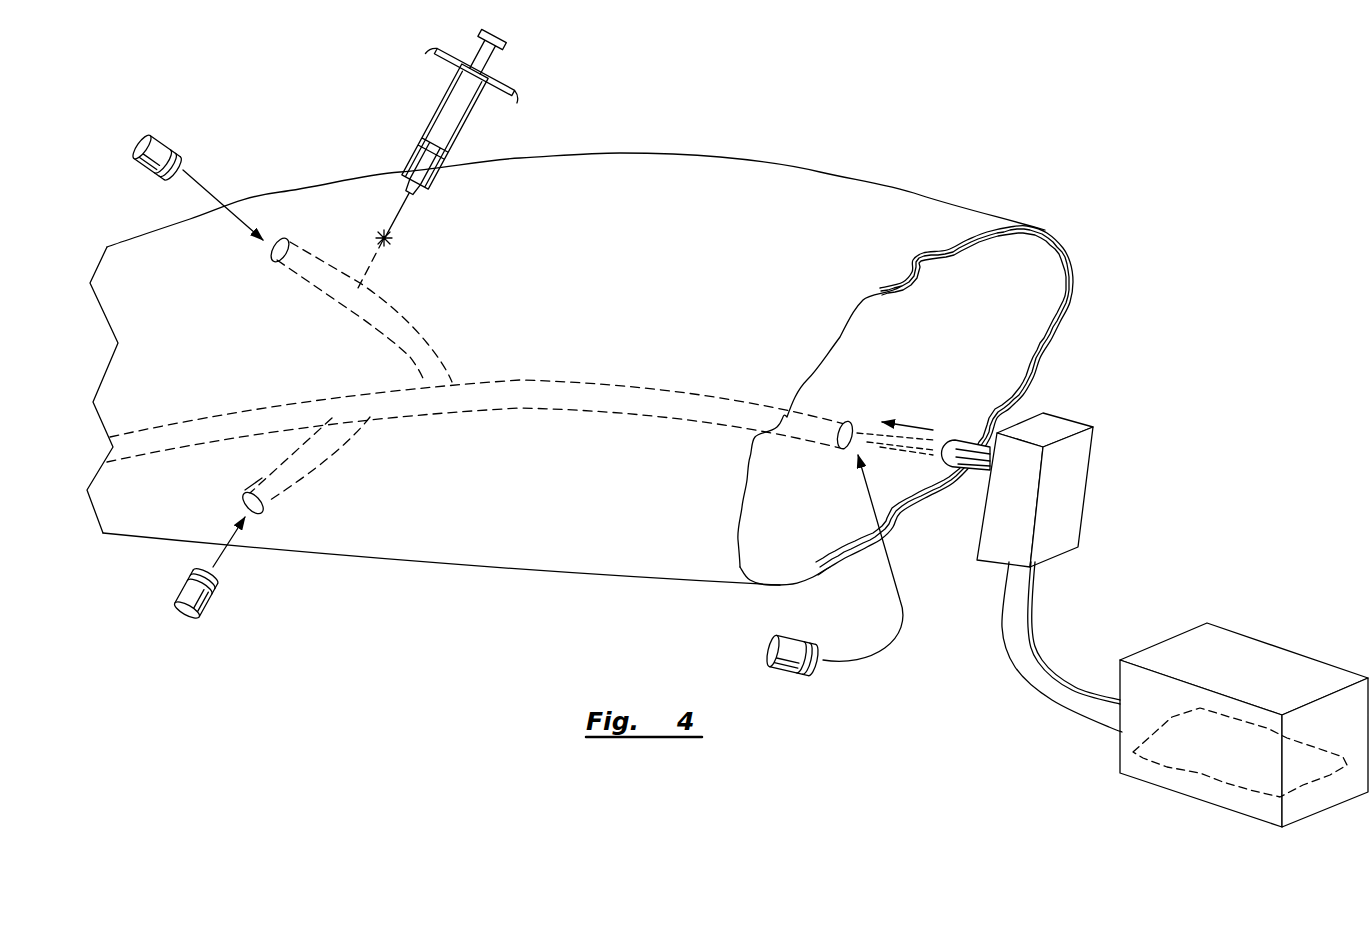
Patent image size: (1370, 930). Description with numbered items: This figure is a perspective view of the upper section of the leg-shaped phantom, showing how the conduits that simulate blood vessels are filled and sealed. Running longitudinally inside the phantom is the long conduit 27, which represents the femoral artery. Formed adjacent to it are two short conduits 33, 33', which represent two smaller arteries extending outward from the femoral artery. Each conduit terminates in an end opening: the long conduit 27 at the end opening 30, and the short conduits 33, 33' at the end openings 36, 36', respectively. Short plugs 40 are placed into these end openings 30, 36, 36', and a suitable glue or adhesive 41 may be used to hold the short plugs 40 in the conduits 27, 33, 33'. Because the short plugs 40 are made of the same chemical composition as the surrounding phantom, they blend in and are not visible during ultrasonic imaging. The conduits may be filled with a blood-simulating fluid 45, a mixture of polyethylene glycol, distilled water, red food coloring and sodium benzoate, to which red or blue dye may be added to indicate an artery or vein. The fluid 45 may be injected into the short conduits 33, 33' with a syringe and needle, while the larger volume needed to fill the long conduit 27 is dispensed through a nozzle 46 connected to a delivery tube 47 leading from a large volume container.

The long conduit 27 is at (513, 387).
The end opening 30 is at (851, 427).
The short conduit 33 is at (387, 311).
The short conduit 33' is at (320, 462).
The end opening 36 is at (286, 207).
The end opening 36' is at (184, 528).
The short plug 40 is at (137, 145).
The glue or adhesive 41 is at (177, 147).
The blood-simulating fluid 45 is at (420, 160).
The nozzle 46 is at (1075, 458).
The delivery tube 47 is at (1043, 683).